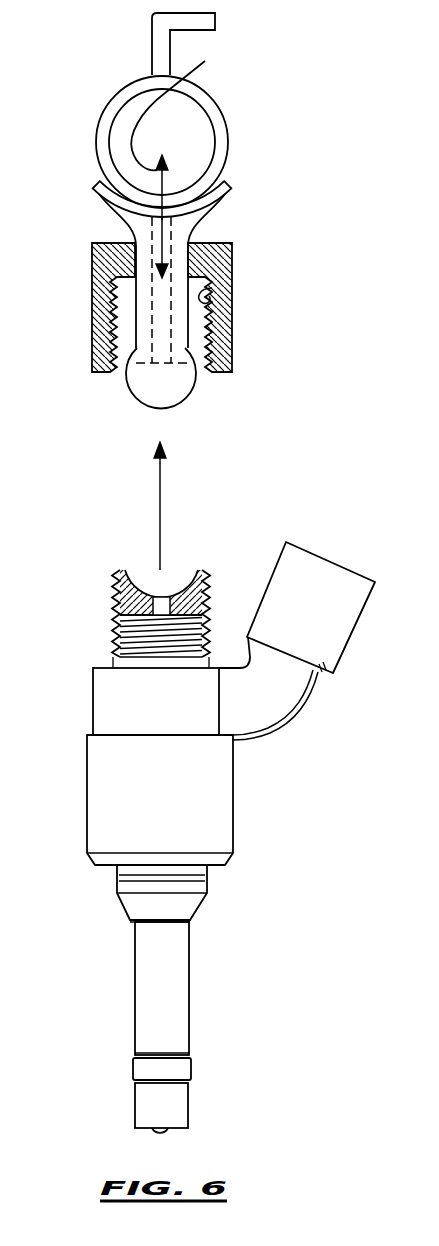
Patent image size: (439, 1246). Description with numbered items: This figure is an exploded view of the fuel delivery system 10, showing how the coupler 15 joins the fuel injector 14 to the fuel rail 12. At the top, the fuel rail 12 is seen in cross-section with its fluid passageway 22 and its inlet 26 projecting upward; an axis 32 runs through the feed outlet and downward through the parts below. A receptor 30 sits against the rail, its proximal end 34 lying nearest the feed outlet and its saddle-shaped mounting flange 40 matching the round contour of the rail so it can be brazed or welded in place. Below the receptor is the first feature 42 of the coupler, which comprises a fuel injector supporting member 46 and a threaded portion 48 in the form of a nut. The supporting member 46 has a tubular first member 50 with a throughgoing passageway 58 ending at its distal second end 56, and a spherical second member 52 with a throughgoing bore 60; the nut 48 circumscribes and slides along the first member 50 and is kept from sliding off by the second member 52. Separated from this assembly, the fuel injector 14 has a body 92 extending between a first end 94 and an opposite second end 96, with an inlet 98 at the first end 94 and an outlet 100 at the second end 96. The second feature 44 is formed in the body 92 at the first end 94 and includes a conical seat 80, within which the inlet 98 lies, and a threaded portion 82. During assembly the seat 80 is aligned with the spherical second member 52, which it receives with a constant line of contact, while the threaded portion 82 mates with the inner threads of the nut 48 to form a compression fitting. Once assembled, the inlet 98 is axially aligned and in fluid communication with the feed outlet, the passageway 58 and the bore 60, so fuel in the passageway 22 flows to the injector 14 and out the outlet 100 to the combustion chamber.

The fuel delivery system 10 is at (318, 116).
The fuel rail 12 is at (212, 100).
The fuel injector 14 is at (88, 788).
The coupler 15 is at (271, 317).
The fluid passageway 22 is at (178, 146).
The inlet 26 is at (152, 22).
The receptor 30 is at (253, 168).
The axis 32 is at (185, 108).
The proximal end 34 is at (237, 207).
The mounting flange 40 is at (101, 192).
The first feature 42 is at (85, 222).
The second feature 44 is at (105, 560).
The fuel injector supporting member 46 is at (190, 238).
The threaded portion 48 is at (212, 288).
The first member 50 is at (178, 318).
The second member 52 is at (127, 390).
The second end 56 is at (213, 389).
The throughgoing passageway 58 is at (158, 377).
The throughgoing bore 60 is at (163, 405).
The seat 80 is at (189, 588).
The threaded portion 82 is at (207, 587).
The body 92 is at (176, 800).
The first end 94 is at (79, 487).
The second end 96 is at (233, 976).
The inlet 98 is at (168, 606).
The outlet 100 is at (177, 1103).